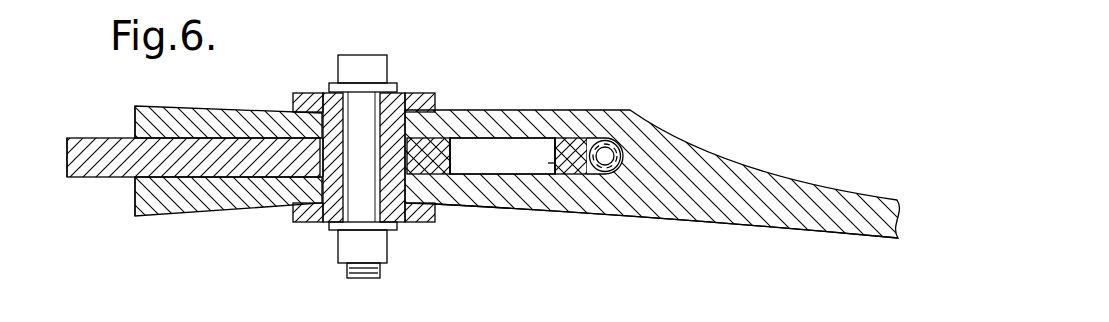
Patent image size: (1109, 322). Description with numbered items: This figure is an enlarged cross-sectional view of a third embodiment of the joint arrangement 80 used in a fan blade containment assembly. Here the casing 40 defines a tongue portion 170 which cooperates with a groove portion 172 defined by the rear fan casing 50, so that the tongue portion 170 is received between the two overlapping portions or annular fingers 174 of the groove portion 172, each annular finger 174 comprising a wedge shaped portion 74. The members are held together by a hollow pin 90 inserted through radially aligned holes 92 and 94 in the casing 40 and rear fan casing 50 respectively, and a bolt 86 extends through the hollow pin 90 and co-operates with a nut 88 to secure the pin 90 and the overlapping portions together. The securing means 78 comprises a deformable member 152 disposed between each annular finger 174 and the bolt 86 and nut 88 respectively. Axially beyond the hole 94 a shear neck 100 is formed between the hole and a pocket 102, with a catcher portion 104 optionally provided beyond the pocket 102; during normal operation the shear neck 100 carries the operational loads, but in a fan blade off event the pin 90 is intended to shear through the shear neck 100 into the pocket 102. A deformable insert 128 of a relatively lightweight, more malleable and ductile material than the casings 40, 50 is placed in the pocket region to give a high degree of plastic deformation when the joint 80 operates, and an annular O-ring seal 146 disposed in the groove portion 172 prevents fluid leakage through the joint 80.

The casing 40 is at (88, 184).
The rear fan casing 50 is at (733, 160).
The wedge shaped portion 74 is at (143, 106).
The securing means 78 is at (363, 153).
The joint arrangement 80 is at (572, 44).
The bolt 86 is at (378, 67).
The nut 88 is at (377, 257).
The hollow pin 90 is at (330, 127).
The hole 92 is at (278, 163).
The hole 94 is at (415, 127).
The shear neck 100 is at (460, 143).
The pocket 102 is at (578, 176).
The catcher portion 104 is at (577, 137).
The deformable insert 128 is at (535, 168).
The annular O-ring seal 146 is at (623, 148).
The deformable member 152 is at (312, 93).
The tongue portion 170 is at (133, 182).
The groove portion 172 is at (490, 212).
The annular finger 174 is at (208, 117).